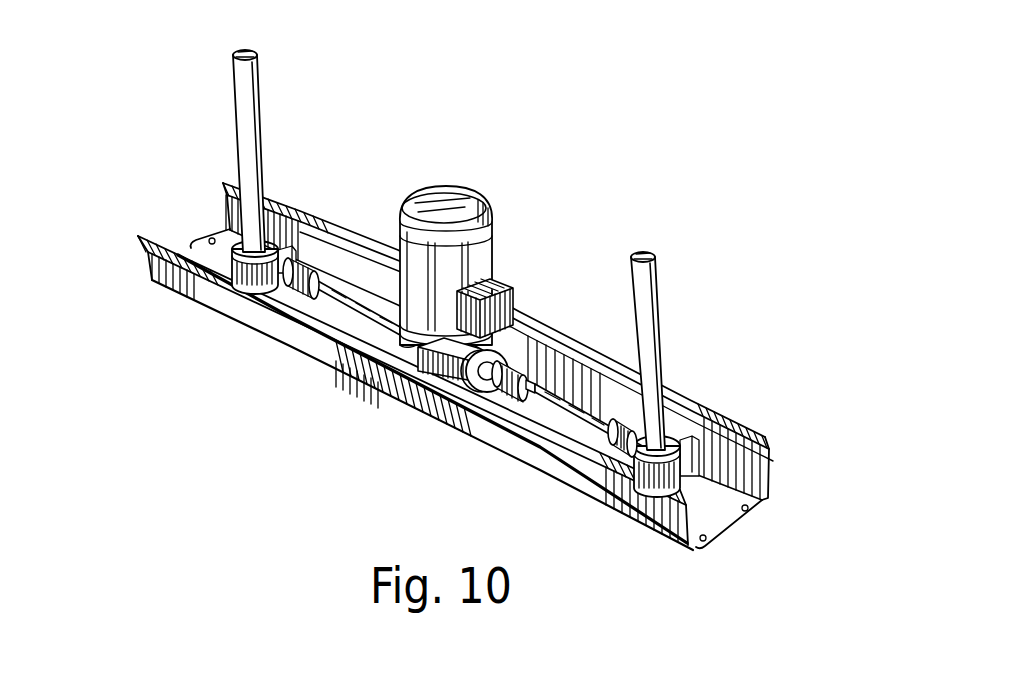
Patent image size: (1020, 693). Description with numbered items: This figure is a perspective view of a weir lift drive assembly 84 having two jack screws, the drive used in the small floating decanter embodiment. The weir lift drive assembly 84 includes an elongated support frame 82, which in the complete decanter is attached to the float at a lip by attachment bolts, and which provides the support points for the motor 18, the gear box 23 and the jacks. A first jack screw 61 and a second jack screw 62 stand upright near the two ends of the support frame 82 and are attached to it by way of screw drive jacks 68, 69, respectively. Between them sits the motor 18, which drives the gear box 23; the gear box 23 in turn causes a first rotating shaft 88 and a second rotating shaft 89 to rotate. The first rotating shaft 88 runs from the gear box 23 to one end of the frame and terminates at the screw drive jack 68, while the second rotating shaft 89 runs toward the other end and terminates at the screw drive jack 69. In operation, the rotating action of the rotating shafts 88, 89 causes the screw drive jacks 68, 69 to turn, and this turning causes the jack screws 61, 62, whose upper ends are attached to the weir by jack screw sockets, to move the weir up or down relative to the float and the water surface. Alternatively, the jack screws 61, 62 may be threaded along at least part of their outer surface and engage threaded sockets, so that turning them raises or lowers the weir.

The motor 18 is at (452, 190).
The gear box 23 is at (372, 388).
The first jack screw 61 is at (263, 117).
The second jack screw 62 is at (660, 322).
The screw drive jack 68 is at (293, 293).
The screw drive jack 69 is at (620, 453).
The support frame 82 is at (730, 414).
The weir lift drive assembly 84 is at (350, 420).
The first rotating shaft 88 is at (346, 292).
The second rotating shaft 89 is at (576, 408).